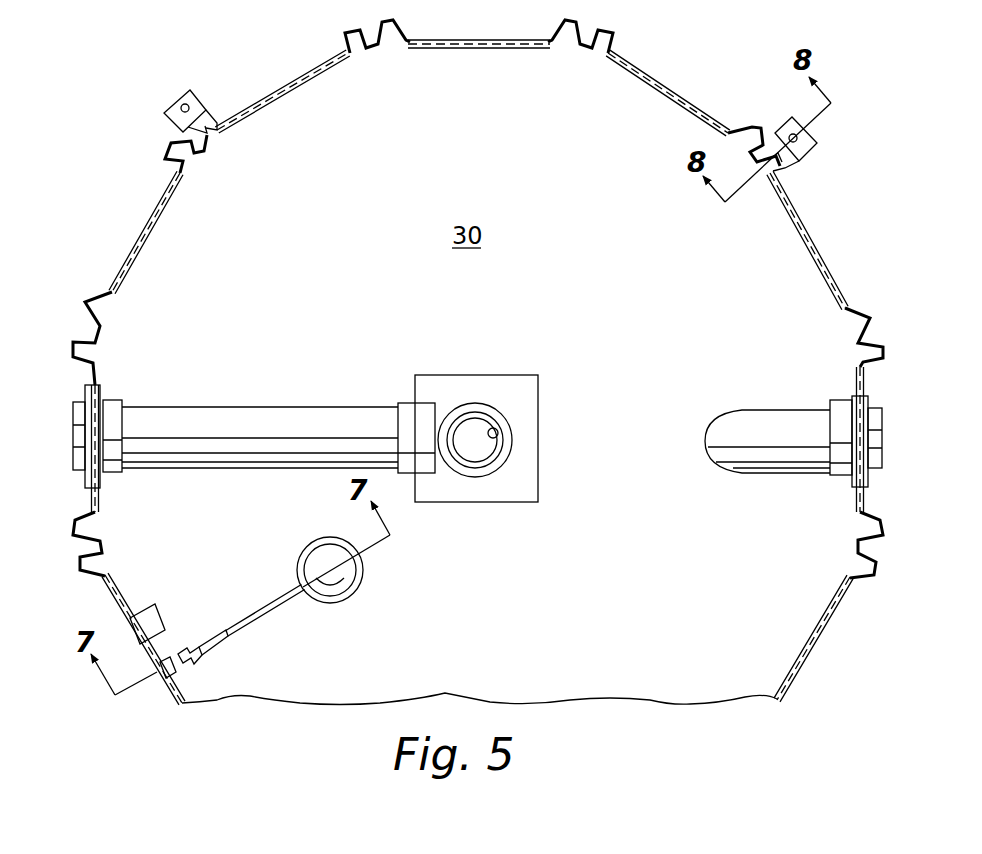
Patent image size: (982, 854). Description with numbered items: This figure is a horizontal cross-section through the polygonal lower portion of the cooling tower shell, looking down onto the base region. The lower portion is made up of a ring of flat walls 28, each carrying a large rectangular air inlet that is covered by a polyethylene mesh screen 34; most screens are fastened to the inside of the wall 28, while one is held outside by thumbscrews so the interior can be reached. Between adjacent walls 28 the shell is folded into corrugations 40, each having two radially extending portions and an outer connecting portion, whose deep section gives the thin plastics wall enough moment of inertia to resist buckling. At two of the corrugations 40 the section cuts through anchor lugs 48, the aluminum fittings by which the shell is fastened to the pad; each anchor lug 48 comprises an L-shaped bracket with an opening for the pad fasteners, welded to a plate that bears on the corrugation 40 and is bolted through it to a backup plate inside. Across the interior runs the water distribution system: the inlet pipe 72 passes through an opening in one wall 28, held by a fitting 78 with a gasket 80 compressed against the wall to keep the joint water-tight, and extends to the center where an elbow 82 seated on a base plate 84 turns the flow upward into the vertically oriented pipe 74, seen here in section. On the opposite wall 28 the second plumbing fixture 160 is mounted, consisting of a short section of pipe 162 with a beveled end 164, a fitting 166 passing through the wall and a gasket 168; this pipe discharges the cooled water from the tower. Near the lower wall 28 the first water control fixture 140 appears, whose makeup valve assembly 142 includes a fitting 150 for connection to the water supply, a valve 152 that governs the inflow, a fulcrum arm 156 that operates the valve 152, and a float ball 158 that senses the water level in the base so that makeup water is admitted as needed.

The flat wall 28 is at (143, 229).
The polyethylene mesh screen 34 is at (300, 90).
The corrugation 40 is at (157, 153).
The anchor lug 48 is at (193, 94).
The inlet pipe 72 is at (237, 411).
The vertically oriented pipe 74 is at (512, 437).
The fitting 78 is at (110, 406).
The gasket 80 is at (100, 488).
The elbow 82 is at (417, 408).
The base plate 84 is at (500, 383).
The first water control fixture 140 is at (276, 632).
The makeup valve assembly 142 is at (194, 634).
The fitting 150 is at (157, 678).
The valve 152 is at (192, 665).
The fulcrum arm 156 is at (208, 653).
The float ball 158 is at (362, 589).
The second plumbing fixture 160 is at (780, 419).
The short section of pipe 162 is at (800, 414).
The beveled end 164 is at (721, 420).
The fitting 166 is at (840, 398).
The gasket 168 is at (858, 495).